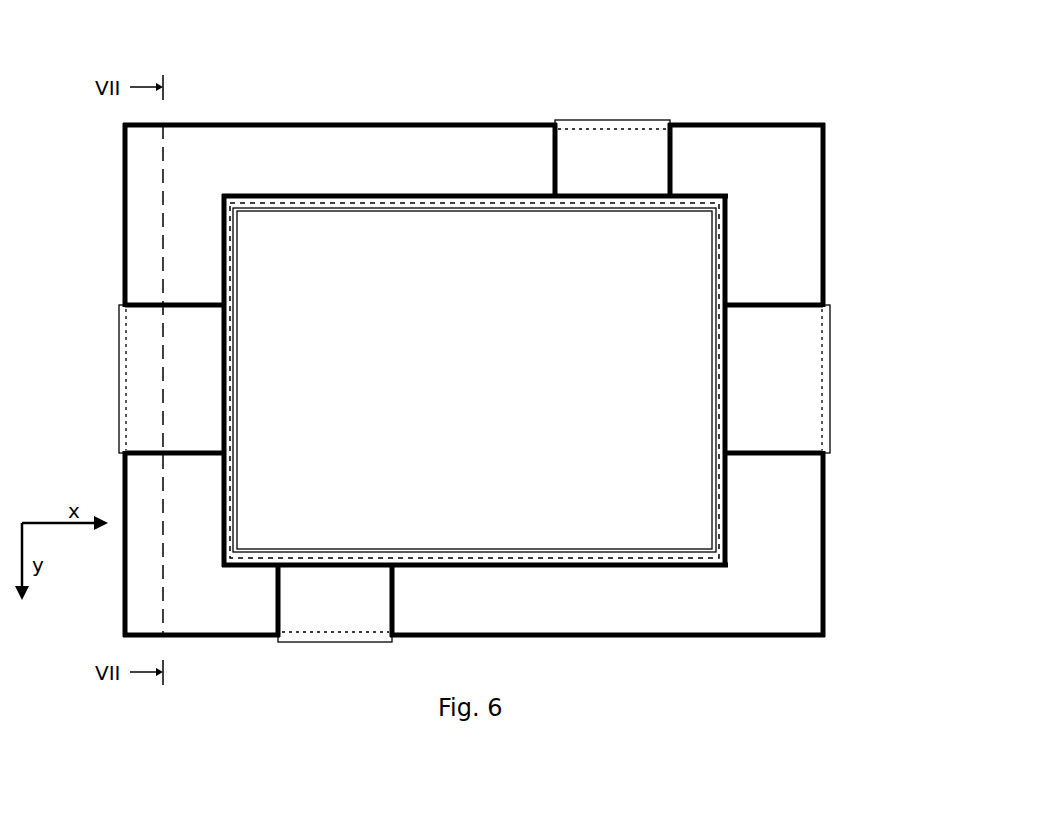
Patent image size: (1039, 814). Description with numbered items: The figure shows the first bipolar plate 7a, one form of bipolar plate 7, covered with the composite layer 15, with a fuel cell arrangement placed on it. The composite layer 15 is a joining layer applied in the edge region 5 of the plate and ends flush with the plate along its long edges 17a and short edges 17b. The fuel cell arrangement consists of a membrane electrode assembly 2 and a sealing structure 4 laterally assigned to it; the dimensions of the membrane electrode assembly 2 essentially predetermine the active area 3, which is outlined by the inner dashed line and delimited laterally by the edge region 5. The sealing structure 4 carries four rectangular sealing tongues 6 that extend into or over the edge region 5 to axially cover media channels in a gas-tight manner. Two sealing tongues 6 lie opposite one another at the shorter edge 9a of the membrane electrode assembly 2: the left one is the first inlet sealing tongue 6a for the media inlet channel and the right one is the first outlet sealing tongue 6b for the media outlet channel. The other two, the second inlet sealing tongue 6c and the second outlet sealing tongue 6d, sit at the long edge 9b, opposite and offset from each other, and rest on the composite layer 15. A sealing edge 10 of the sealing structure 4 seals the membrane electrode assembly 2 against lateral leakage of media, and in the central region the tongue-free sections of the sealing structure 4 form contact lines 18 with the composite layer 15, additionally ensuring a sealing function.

The membrane electrode assembly 2 is at (632, 522).
The active area 3 is at (398, 205).
The sealing structure 4 is at (727, 193).
The edge region 5 is at (483, 387).
The sealing tongue 6 is at (487, 382).
The first inlet sealing tongue 6a is at (144, 352).
The first outlet sealing tongue 6b is at (820, 393).
The second inlet sealing tongue 6c is at (655, 160).
The second outlet sealing tongue 6d is at (345, 607).
The bipolar plate 7 is at (636, 576).
The first bipolar plate 7a is at (805, 605).
The shorter edge 9a is at (222, 245).
The long edge 9b is at (450, 193).
The sealing edge 10 is at (715, 351).
The composite layer 15 is at (330, 163).
The long edge 17a is at (530, 125).
The short edge 17b is at (122, 214).
The contact line 18 is at (540, 567).